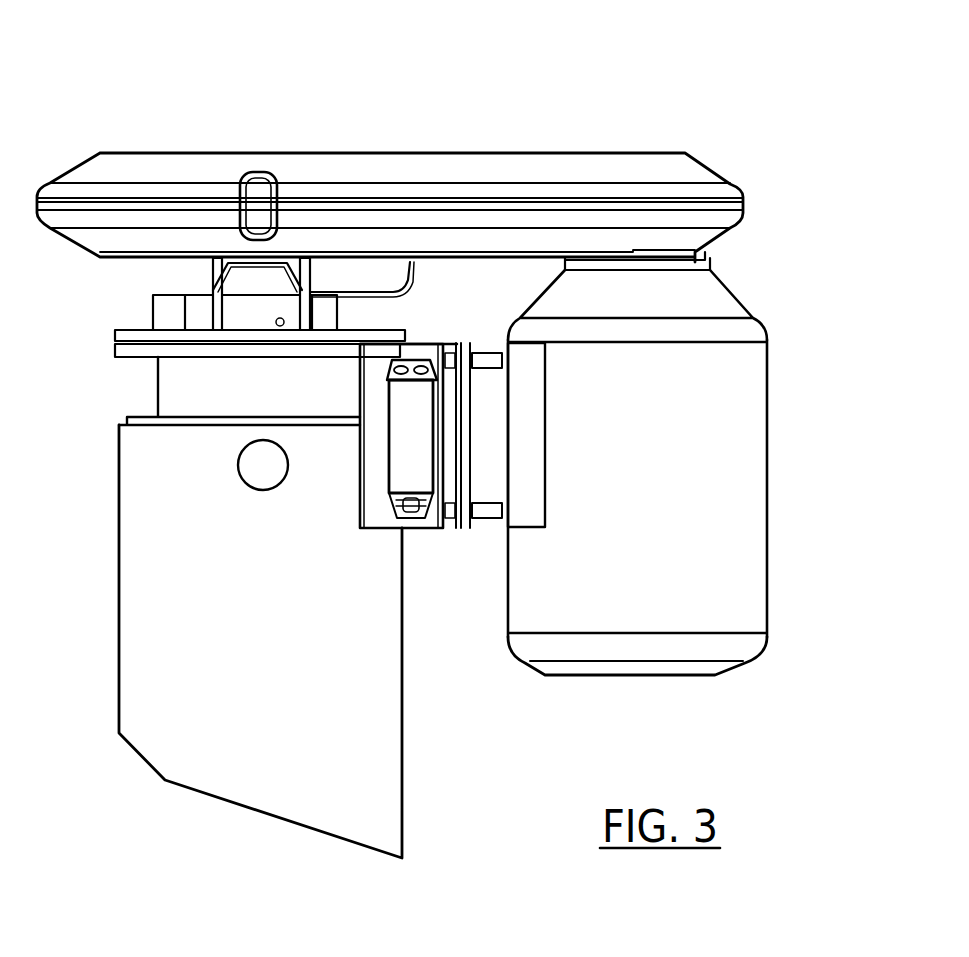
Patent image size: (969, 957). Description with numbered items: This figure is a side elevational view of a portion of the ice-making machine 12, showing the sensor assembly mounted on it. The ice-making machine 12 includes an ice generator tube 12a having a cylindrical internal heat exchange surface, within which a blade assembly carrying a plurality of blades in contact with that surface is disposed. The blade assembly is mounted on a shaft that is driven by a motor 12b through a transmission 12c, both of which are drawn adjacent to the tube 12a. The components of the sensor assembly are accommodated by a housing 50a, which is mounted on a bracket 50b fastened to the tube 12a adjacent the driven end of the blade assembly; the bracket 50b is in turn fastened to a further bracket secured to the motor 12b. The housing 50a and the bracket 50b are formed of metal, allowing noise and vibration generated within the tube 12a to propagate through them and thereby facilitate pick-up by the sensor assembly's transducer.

The ice-making machine 12 is at (752, 140).
The ice generator tube 12a is at (285, 557).
The motor 12b is at (745, 507).
The transmission 12c is at (203, 170).
The housing 50a is at (408, 462).
The bracket 50b is at (377, 360).